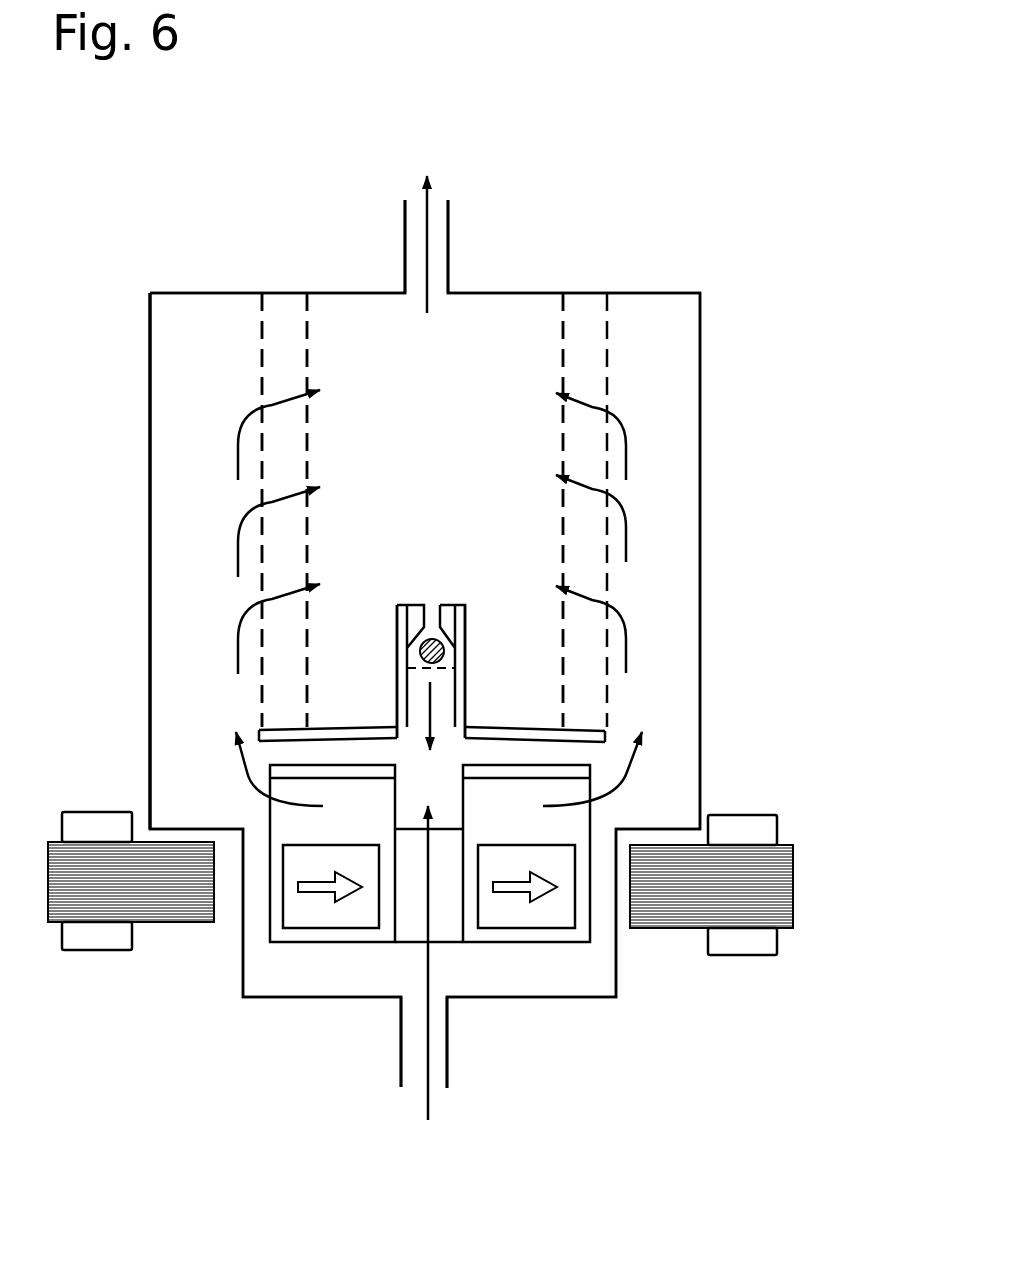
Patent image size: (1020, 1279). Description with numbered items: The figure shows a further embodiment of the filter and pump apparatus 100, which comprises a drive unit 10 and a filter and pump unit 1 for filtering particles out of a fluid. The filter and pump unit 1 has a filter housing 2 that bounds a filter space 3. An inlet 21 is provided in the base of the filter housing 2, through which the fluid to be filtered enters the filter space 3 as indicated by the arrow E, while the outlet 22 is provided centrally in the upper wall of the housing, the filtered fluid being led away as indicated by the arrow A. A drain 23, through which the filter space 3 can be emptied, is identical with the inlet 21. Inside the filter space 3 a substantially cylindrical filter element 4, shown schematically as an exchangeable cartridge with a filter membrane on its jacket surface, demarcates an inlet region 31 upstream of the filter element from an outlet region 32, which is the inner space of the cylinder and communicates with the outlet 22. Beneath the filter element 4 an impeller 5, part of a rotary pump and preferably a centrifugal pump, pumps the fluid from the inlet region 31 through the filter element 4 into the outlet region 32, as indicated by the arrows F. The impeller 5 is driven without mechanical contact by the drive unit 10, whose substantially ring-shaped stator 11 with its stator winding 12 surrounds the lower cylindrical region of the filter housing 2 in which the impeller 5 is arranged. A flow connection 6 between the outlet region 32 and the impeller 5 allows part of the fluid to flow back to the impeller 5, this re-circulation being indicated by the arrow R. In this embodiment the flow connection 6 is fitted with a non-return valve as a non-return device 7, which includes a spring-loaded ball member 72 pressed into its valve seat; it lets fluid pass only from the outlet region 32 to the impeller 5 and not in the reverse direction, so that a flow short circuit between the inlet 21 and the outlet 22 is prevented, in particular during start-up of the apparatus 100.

The filter and pump apparatus 100 is at (633, 161).
The filter and pump unit 1 is at (613, 291).
The filter housing 2 is at (148, 407).
The filter space 3 is at (170, 520).
The filter element 4 is at (262, 353).
The impeller 5 is at (270, 815).
The flow connection 6 is at (468, 670).
The non-return device 7 is at (397, 627).
The ball member 72 is at (430, 638).
The drive unit 10 is at (92, 953).
The stator 11 is at (795, 898).
The stator winding 12 is at (780, 823).
The inlet 21 is at (497, 1052).
The drain 23 is at (447, 1070).
The outlet 22 is at (450, 230).
The inlet region 31 is at (217, 394).
The outlet region 32 is at (460, 446).
The arrow A is at (431, 192).
The arrow E is at (428, 1033).
The arrow R is at (432, 709).
The arrows F is at (627, 442).